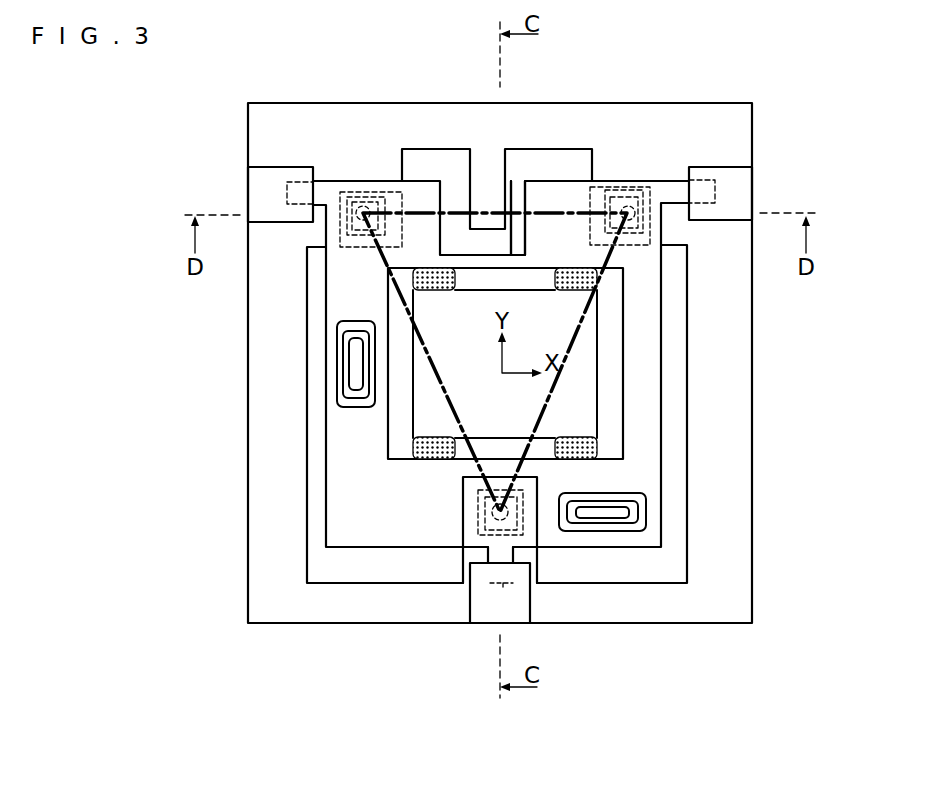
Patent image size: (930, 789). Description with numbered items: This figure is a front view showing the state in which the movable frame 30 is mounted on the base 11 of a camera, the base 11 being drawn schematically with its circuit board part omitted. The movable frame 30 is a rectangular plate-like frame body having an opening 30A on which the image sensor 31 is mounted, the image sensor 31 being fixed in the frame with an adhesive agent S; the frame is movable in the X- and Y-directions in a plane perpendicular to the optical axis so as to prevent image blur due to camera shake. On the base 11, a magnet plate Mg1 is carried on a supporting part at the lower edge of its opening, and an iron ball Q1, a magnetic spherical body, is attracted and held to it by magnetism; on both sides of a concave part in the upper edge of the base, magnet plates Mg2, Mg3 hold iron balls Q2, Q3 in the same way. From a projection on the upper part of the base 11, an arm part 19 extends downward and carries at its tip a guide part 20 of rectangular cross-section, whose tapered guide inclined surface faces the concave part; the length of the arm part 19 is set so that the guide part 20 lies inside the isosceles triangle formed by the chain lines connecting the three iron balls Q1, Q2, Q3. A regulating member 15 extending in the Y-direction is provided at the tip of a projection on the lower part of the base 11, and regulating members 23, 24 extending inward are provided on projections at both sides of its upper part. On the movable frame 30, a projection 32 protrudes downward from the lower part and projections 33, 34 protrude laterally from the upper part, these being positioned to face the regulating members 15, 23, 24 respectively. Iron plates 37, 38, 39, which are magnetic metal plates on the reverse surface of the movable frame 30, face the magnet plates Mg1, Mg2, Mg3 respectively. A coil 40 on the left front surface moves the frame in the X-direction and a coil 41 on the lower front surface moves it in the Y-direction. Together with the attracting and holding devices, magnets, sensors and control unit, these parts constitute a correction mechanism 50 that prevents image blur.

The base 11 is at (309, 630).
The regulating member 15 is at (522, 603).
The arm part 19 is at (467, 183).
The guide part 20 is at (485, 222).
The regulating member 23 is at (270, 202).
The regulating member 24 is at (733, 200).
The movable frame 30 is at (320, 478).
The opening 30A is at (397, 420).
The image sensor 31 is at (577, 415).
The projection 32 is at (503, 586).
The projection 33 is at (285, 192).
The projection 34 is at (718, 188).
The iron plate 37 is at (523, 520).
The iron plate 38 is at (352, 186).
The iron plate 39 is at (637, 194).
The coil 40 is at (337, 368).
The coil 41 is at (640, 513).
The correction mechanism 50 is at (616, 539).
The magnet plate Mg1 is at (478, 512).
The magnet plate Mg2 is at (368, 192).
The magnet plate Mg3 is at (623, 194).
The iron ball Q1 is at (498, 535).
The iron ball Q2 is at (377, 194).
The iron ball Q3 is at (608, 194).
The adhesive agent S is at (440, 291).